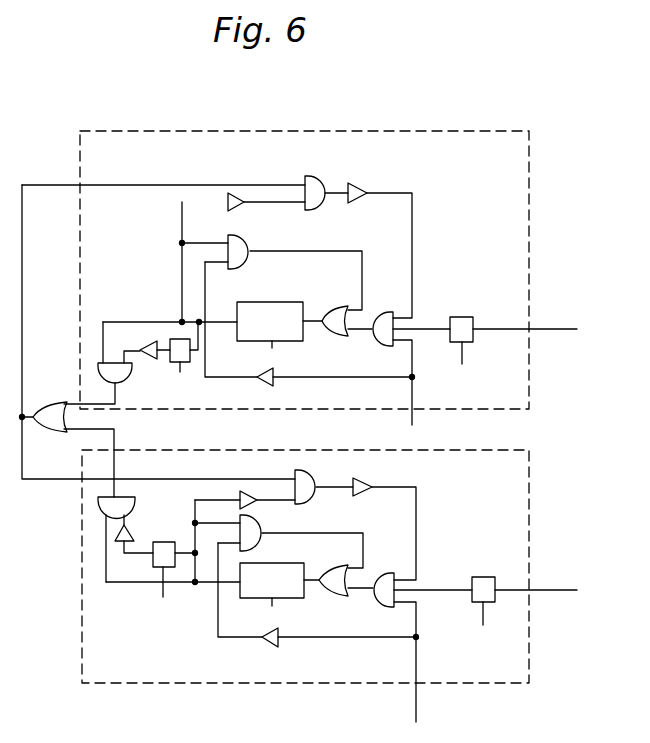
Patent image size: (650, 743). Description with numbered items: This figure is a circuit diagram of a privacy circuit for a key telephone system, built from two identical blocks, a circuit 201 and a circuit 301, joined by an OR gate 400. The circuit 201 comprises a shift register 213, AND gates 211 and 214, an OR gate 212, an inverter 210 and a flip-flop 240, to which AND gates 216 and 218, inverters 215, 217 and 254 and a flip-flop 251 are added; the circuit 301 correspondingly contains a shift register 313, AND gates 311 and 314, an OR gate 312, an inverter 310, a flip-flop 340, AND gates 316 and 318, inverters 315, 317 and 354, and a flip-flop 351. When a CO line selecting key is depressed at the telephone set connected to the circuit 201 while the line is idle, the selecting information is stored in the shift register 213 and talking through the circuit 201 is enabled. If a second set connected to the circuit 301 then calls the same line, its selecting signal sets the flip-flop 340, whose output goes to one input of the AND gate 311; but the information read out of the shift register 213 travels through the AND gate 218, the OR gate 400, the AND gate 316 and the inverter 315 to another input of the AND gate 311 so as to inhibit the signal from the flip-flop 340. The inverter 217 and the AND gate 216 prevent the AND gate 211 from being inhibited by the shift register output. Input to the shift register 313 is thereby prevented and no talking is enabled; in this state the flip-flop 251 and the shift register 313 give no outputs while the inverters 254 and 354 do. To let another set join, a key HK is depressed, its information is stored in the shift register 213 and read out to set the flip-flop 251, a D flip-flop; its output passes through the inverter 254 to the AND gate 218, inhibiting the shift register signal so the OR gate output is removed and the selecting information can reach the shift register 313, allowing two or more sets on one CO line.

The circuit 201 is at (258, 131).
The inverter 217 is at (240, 192).
The AND gate 216 is at (313, 176).
The inverter 215 is at (364, 183).
The AND gate 214 is at (247, 240).
The shift register 213 is at (273, 302).
The OR gate 212 is at (330, 336).
The AND gate 211 is at (380, 346).
The inverter 210 is at (275, 384).
The inverter 254 is at (148, 341).
The flip-flop 251 is at (170, 360).
The AND gate 218 is at (100, 363).
The OR gate 400 is at (58, 402).
The flip-flop 240 is at (463, 317).
The circuit 301 is at (203, 685).
The inverter 317 is at (252, 490).
The AND gate 316 is at (314, 480).
The inverter 315 is at (370, 482).
The AND gate 314 is at (262, 524).
The shift register 313 is at (271, 563).
The OR gate 312 is at (331, 596).
The AND gate 311 is at (380, 607).
The inverter 310 is at (271, 647).
The AND gate 318 is at (135, 498).
The inverter 354 is at (124, 542).
The flip-flop 351 is at (163, 542).
The flip-flop 340 is at (484, 577).